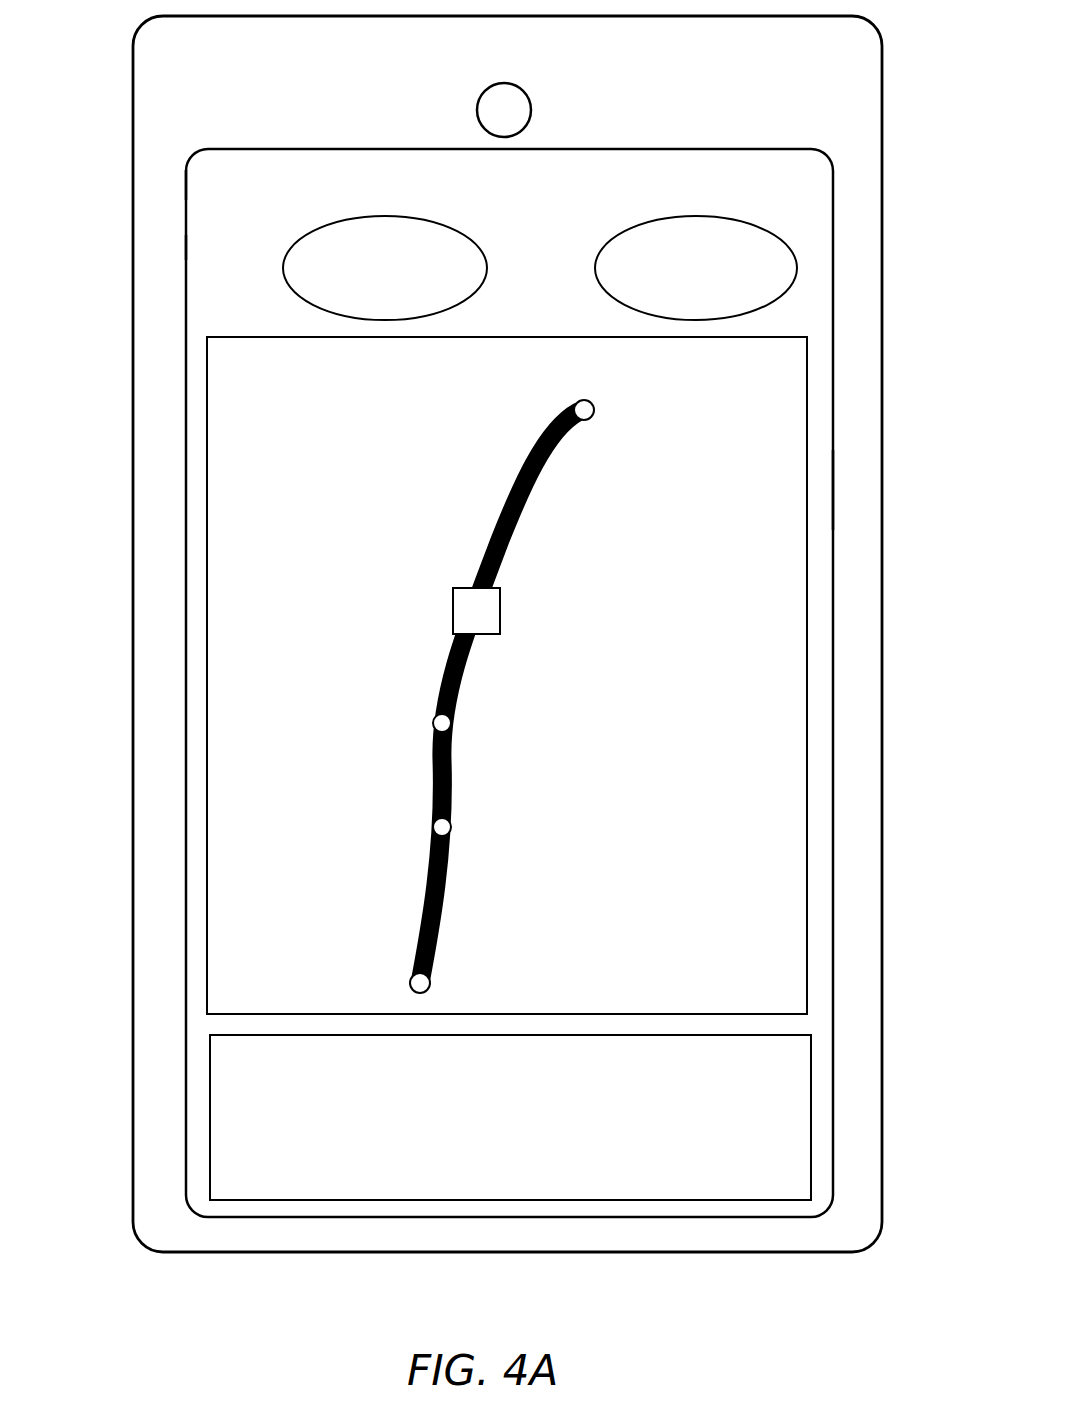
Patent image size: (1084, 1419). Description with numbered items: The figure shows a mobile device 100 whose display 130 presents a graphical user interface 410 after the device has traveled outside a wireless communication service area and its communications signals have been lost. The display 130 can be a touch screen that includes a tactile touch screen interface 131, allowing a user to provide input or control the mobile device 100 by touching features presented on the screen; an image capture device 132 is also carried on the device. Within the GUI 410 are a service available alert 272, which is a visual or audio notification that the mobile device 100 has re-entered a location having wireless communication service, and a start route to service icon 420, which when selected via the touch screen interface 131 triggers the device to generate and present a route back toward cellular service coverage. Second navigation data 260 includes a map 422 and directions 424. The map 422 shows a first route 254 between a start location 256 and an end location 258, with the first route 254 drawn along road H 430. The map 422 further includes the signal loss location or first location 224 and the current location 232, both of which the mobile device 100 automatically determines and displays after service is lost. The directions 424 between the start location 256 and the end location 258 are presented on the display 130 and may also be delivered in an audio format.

The mobile device 100 is at (507, 634).
The display 130 is at (509, 683).
The touch screen interface 131 is at (223, 182).
The image capture device 132 is at (531, 108).
The graphical user interface 410 is at (223, 247).
The service available alert 272 is at (283, 277).
The start route to service icon 420 is at (798, 268).
The second navigation data 260 is at (830, 485).
The map 422 is at (733, 665).
The first route 254 is at (480, 554).
The end location 258 is at (595, 410).
The road H 430 is at (500, 607).
The current location 232 is at (437, 720).
The signal loss location 224 is at (435, 823).
The start location 256 is at (432, 985).
The directions 424 is at (742, 1092).